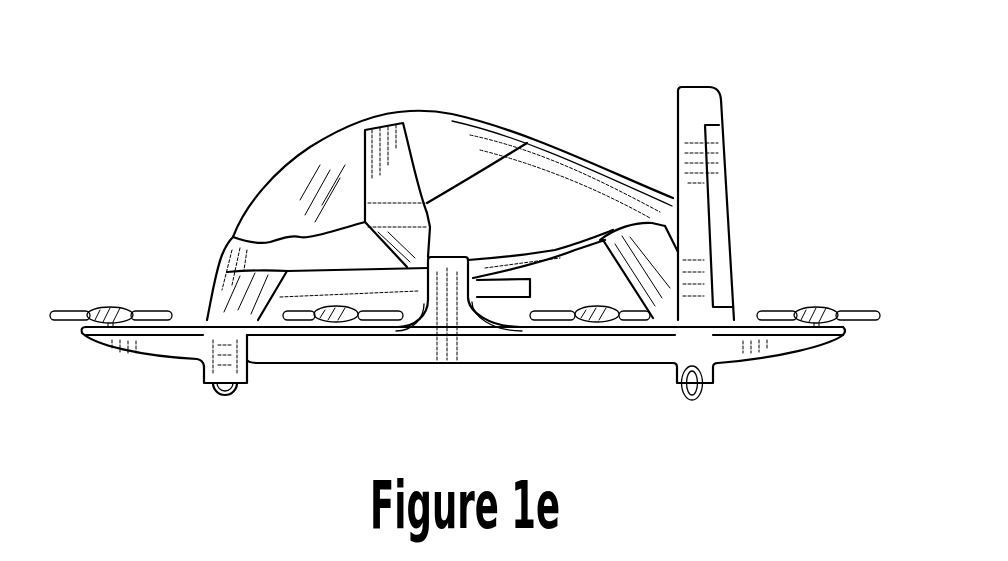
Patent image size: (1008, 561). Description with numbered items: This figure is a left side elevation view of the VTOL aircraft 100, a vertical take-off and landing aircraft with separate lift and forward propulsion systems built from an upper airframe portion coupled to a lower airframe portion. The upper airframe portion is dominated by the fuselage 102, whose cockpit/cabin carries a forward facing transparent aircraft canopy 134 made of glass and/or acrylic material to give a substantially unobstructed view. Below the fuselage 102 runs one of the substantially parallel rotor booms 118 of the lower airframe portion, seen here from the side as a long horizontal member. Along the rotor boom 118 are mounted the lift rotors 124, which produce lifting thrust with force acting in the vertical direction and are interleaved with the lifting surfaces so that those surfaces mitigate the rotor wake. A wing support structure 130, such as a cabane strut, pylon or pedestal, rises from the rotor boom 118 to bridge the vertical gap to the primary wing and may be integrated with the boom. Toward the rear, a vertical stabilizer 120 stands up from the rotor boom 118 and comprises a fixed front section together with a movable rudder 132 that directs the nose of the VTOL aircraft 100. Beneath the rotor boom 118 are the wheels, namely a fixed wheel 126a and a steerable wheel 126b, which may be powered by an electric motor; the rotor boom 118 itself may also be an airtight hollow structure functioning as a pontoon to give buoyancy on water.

The VTOL aircraft 100 is at (68, 51).
The fuselage 102 is at (585, 158).
The rotor boom 118 is at (358, 366).
The vertical stabilizer 120 is at (692, 86).
The lift rotor 124 is at (112, 308).
The fixed wheel 126a is at (228, 406).
The steerable wheel 126b is at (691, 400).
The wing support structure 130 is at (456, 300).
The rudder 132 is at (723, 191).
The aircraft canopy 134 is at (298, 160).